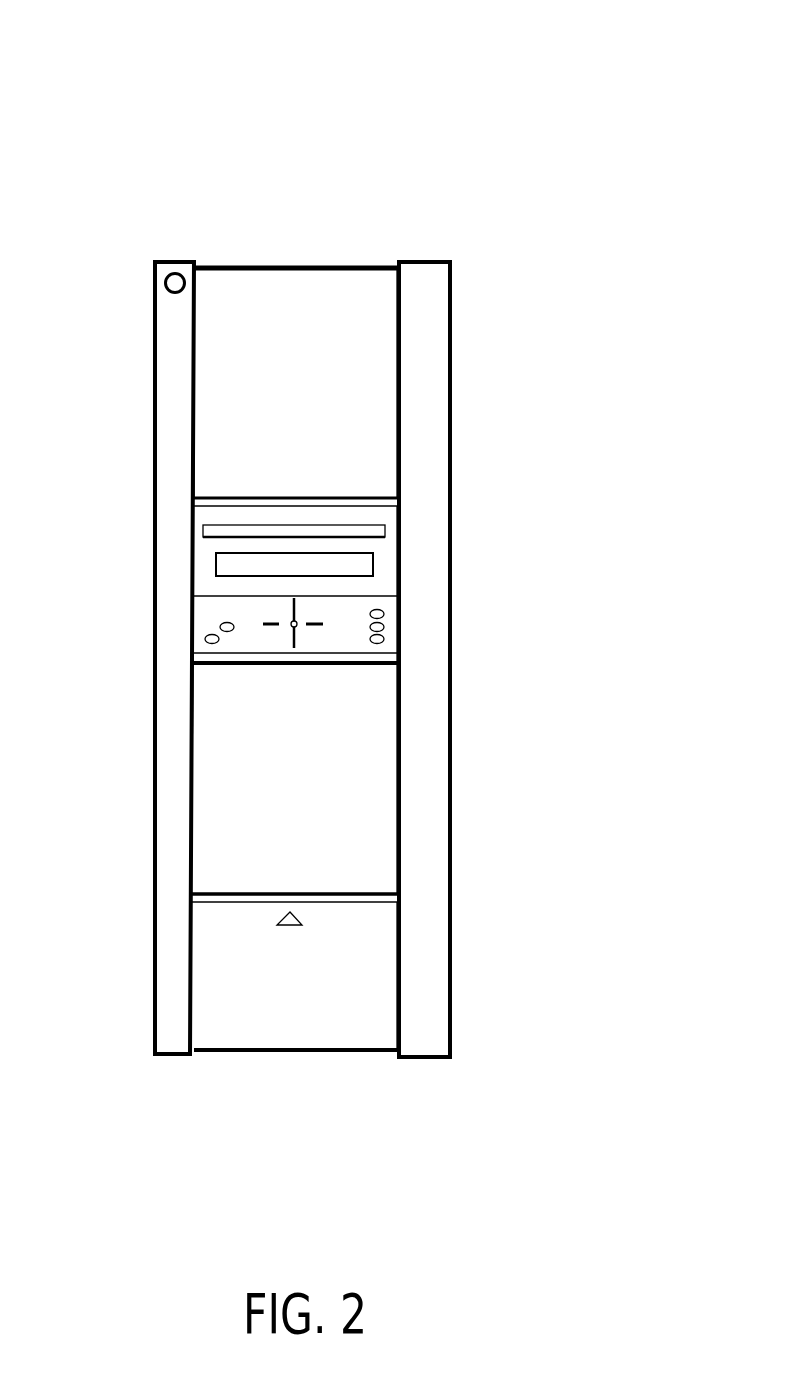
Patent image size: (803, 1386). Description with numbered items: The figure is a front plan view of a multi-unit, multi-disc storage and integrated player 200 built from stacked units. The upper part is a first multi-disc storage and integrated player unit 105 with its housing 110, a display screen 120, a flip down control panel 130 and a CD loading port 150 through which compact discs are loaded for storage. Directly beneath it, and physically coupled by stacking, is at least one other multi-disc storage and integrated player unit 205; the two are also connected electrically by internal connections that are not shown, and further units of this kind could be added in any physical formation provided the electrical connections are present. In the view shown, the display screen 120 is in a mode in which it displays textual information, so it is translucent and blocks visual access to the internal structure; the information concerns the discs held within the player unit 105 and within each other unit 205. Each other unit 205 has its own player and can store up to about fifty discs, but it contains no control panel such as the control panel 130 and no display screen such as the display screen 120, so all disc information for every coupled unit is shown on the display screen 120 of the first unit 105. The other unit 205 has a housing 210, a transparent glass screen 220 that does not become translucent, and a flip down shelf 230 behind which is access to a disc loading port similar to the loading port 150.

The multi-unit, multi-disc storage and integrated player 200 is at (545, 140).
The multi-disc storage and integrated player unit 105 is at (428, 562).
The housing 110 is at (413, 590).
The display screen 120 is at (210, 350).
The flip down control panel 130 is at (387, 635).
The CD loading port 150 is at (373, 562).
The other multi-disc storage and integrated player unit 205 is at (185, 902).
The housing 210 is at (168, 1003).
The transparent glass screen 220 is at (232, 730).
The flip down shelf 230 is at (343, 1005).